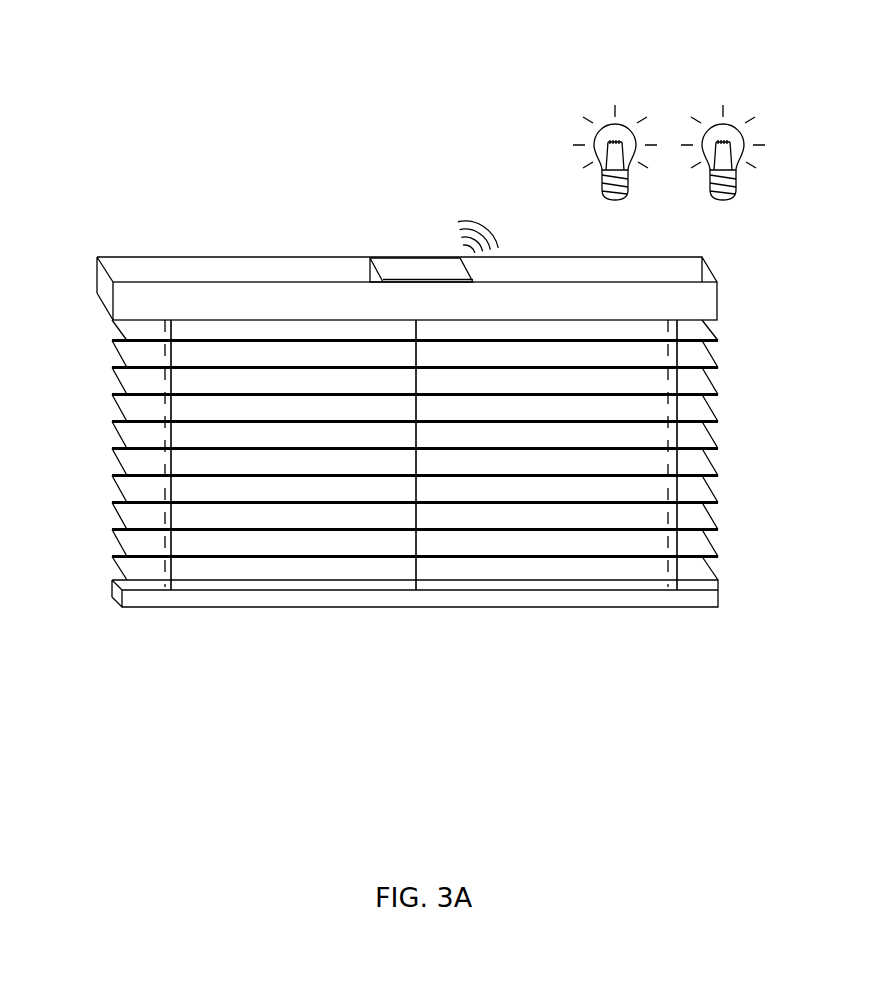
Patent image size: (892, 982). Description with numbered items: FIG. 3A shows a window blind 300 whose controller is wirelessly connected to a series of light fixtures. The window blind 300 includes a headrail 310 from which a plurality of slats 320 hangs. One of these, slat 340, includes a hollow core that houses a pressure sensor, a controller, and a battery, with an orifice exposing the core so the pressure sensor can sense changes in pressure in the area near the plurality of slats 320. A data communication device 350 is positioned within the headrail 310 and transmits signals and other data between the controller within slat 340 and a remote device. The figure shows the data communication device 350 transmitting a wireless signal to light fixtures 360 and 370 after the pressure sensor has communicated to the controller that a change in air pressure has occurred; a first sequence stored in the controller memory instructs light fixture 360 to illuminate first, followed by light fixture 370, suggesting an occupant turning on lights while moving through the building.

The window blind 300 is at (163, 182).
The headrail 310 is at (710, 300).
The plurality of slats 320 is at (723, 327).
The slat 340 is at (138, 465).
The data communication device 350 is at (415, 267).
The light fixture 360 is at (608, 122).
The light fixture 370 is at (717, 130).